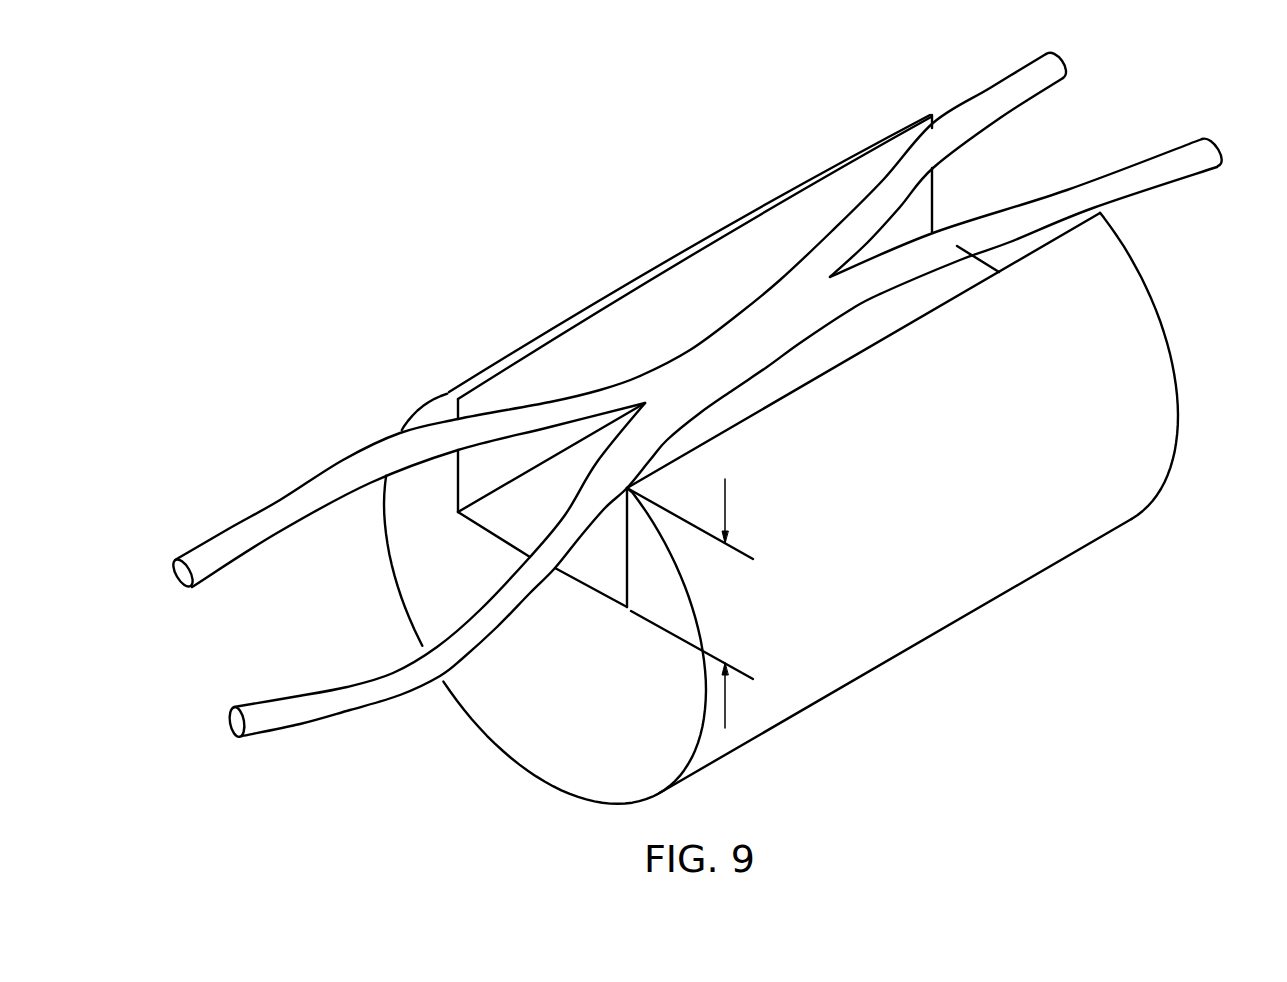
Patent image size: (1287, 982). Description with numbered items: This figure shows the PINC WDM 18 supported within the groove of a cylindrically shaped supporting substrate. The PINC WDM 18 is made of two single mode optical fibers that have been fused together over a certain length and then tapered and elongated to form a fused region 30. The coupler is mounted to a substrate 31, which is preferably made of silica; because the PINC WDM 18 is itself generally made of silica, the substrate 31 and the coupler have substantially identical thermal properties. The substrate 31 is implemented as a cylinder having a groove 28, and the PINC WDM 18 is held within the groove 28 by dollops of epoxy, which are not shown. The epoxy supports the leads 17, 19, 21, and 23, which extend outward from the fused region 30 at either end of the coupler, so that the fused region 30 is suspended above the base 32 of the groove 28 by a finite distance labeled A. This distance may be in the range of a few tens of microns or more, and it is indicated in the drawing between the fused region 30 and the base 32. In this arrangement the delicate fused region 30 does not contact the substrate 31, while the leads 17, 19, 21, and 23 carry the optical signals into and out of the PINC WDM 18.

The lead 17 is at (280, 510).
The PINC WDM 18 is at (973, 116).
The lead 19 is at (378, 688).
The lead 21 is at (1047, 70).
The lead 23 is at (1190, 158).
The groove 28 is at (650, 318).
The fused region 30 is at (747, 336).
The substrate 31 is at (920, 617).
The base 32 is at (520, 525).